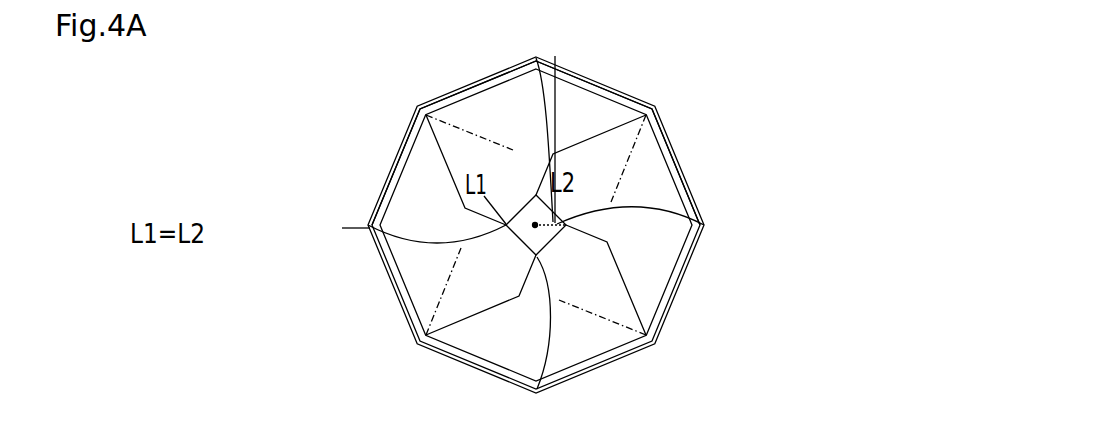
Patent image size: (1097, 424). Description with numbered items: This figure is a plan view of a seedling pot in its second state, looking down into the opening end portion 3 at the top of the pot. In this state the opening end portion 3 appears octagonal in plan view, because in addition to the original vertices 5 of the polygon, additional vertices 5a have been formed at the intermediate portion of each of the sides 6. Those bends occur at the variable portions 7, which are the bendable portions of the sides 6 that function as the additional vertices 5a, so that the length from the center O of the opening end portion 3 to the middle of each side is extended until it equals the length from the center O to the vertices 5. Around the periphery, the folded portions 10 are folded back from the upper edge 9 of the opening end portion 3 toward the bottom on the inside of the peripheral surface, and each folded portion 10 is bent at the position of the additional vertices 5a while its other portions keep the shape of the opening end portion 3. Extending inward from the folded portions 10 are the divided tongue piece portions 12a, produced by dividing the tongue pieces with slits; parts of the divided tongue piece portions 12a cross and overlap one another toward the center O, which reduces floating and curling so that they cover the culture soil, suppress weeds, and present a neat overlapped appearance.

The vertices 5 is at (538, 56).
The additional vertices 5a is at (413, 102).
The sides 6 is at (463, 82).
The upper edge 9 is at (618, 143).
The opening end portion 3 is at (454, 143).
The variable portions 7 is at (432, 100).
The folded portions 10 is at (607, 88).
The divided tongue piece portions 12a is at (647, 183).
The center O is at (535, 225).